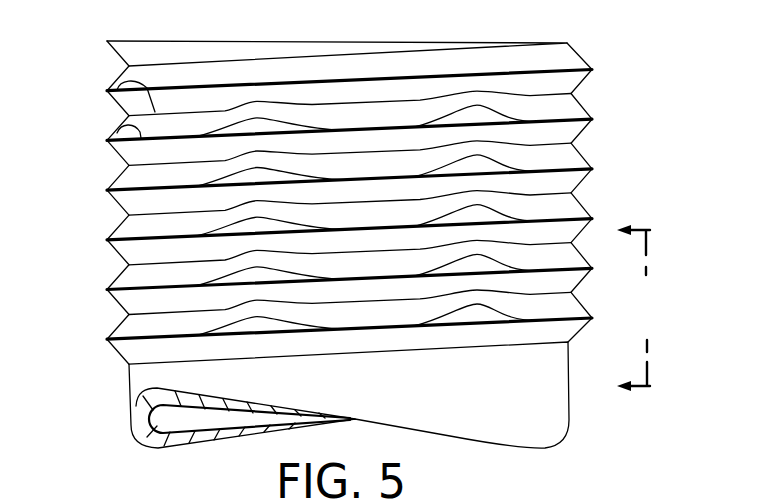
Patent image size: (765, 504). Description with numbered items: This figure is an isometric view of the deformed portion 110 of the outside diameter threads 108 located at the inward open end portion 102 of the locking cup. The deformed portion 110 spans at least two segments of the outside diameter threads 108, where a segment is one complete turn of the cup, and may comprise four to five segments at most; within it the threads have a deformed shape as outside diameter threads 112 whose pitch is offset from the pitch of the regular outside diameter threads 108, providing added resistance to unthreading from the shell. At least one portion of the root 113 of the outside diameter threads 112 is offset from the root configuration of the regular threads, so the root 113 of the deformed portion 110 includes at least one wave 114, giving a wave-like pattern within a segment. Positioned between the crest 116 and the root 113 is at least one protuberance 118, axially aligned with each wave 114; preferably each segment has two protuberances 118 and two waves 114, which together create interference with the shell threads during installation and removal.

The inward open end portion 102 is at (558, 80).
The outside diameter threads 108 is at (120, 355).
The deformed portion 110 is at (96, 262).
The outside diameter threads with deformed thread shape 112 is at (582, 131).
The root 113 is at (117, 89).
The wave 114 is at (490, 92).
The crest 116 is at (118, 133).
The protuberance 118 is at (258, 127).